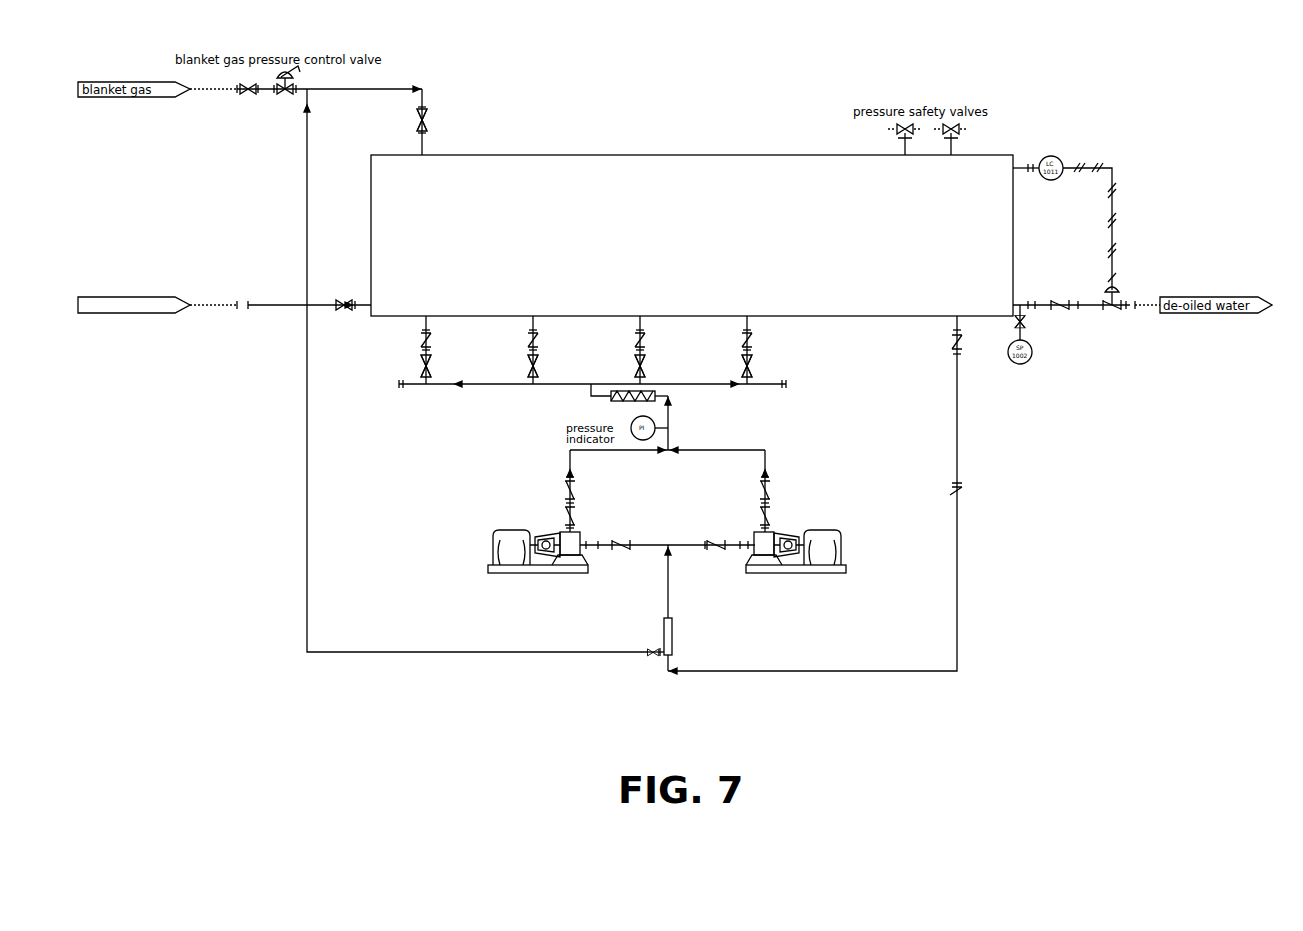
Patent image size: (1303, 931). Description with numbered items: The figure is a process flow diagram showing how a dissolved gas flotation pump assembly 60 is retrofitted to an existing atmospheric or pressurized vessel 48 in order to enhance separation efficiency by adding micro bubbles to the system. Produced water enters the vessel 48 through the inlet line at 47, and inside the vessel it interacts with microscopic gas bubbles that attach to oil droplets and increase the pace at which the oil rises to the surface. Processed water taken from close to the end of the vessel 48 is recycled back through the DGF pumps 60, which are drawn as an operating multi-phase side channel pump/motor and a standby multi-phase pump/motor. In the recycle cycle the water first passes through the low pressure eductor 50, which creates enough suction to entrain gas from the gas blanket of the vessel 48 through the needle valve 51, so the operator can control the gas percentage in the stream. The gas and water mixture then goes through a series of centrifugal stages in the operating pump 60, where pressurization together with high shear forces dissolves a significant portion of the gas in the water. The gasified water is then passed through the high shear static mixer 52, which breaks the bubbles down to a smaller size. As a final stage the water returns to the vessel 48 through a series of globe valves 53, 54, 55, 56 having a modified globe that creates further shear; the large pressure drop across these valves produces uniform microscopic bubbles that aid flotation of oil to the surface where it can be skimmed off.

The produced water inlet 47 is at (350, 316).
The vessel 48 is at (654, 122).
The low pressure eductor 50 is at (662, 658).
The needle valve 51 is at (648, 648).
The high shear static mixer 52 is at (598, 404).
The globe valve 53 is at (438, 366).
The globe valve 54 is at (542, 364).
The globe valve 55 is at (654, 363).
The globe valve 56 is at (753, 363).
The DGF pump assembly 60 is at (560, 530).